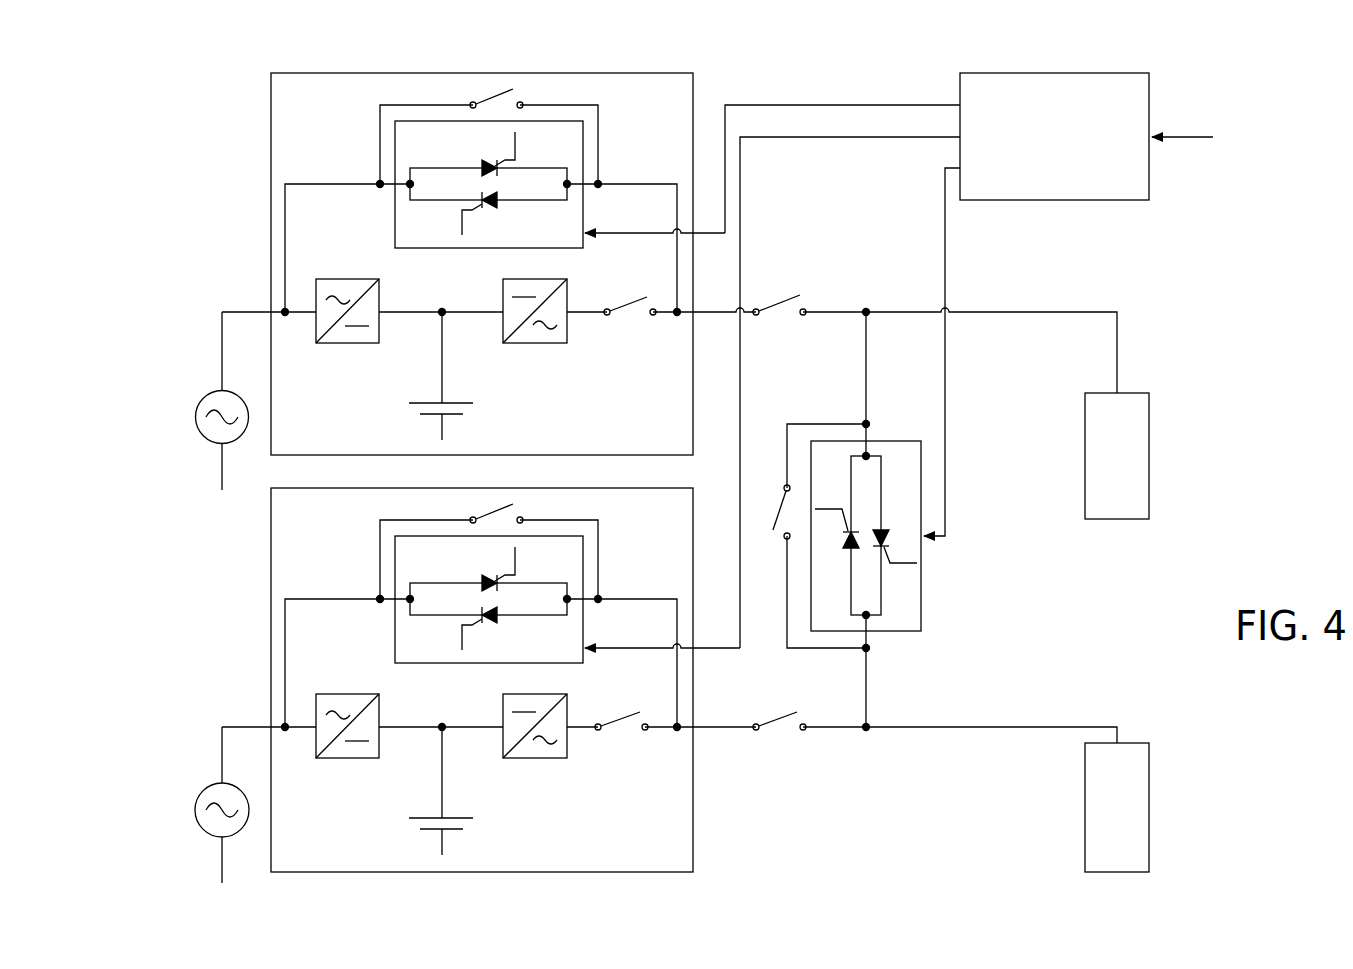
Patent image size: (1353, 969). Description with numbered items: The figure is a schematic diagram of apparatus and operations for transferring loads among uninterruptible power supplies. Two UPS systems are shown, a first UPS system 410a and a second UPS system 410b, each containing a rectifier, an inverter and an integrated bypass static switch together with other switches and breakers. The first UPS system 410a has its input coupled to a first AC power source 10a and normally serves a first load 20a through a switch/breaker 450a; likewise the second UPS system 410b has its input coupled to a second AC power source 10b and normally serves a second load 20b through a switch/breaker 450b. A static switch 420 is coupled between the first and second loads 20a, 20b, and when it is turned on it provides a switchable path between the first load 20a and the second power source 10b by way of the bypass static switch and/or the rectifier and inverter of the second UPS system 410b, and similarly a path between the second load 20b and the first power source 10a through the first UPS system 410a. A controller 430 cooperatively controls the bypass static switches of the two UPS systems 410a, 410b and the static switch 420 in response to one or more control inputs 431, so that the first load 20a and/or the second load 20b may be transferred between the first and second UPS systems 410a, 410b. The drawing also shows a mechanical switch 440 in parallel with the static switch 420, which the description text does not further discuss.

The first AC power source 10a is at (205, 440).
The second AC power source 10b is at (210, 837).
The first load 20a is at (1149, 455).
The second load 20b is at (1149, 807).
The first UPS system 410a is at (269, 263).
The second UPS system 410b is at (268, 680).
The static switch 420 is at (922, 615).
The controller 430 is at (1055, 72).
The control input 431 is at (1180, 133).
The tie switch 440 is at (766, 496).
The switch/breaker 450a is at (807, 287).
The switch/breaker 450b is at (790, 696).